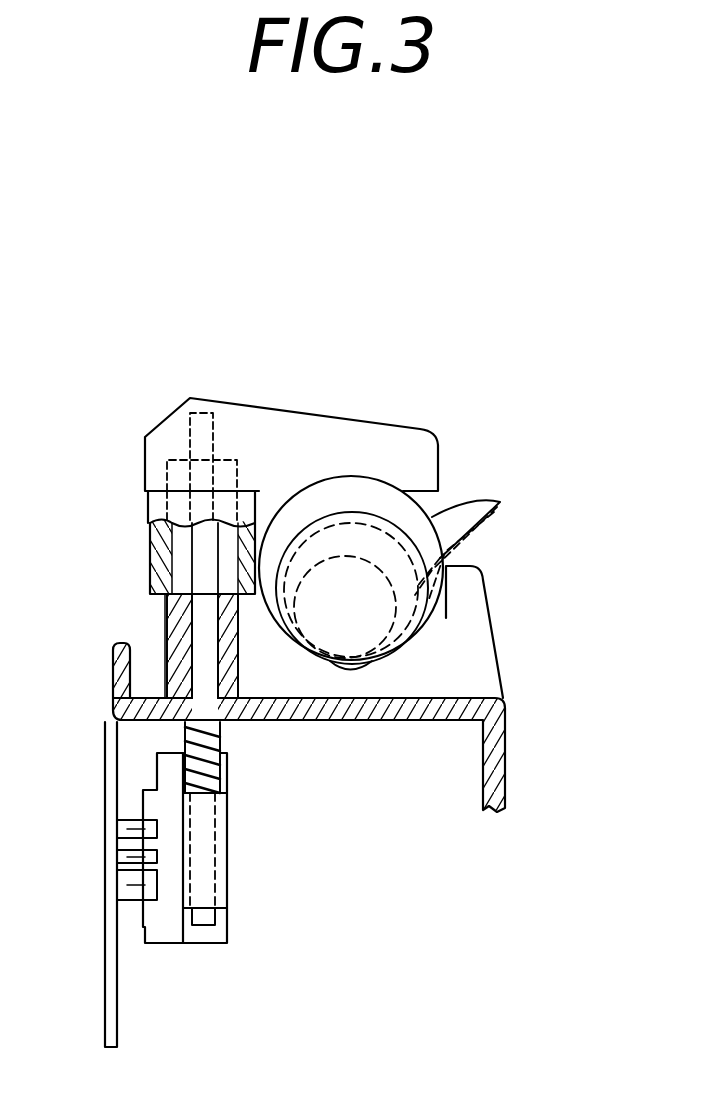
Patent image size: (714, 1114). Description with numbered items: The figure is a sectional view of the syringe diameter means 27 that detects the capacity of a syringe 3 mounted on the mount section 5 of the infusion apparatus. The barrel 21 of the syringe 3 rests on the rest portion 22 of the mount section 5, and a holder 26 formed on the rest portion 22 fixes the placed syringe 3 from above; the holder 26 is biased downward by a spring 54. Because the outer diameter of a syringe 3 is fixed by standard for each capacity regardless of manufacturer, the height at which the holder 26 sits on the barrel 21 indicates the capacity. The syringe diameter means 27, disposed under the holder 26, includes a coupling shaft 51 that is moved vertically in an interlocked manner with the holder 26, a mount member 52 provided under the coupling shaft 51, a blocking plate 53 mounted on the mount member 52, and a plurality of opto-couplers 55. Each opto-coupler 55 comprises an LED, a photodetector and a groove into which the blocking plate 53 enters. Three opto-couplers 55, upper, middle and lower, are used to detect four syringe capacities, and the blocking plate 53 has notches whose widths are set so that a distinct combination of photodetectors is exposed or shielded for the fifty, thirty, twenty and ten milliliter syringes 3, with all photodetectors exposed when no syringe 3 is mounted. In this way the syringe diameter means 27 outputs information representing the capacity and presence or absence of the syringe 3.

The syringe 3 is at (430, 510).
The mount section 5 is at (447, 646).
The barrel 21 is at (477, 543).
The rest portion 22 is at (448, 603).
The holder 26 is at (332, 428).
The syringe diameter means 27 is at (256, 926).
The coupling shaft 51 is at (198, 640).
The mount member 52 is at (228, 858).
The blocking plate 53 is at (170, 937).
The spring 54 is at (218, 735).
The opto-couplers 55 is at (130, 890).